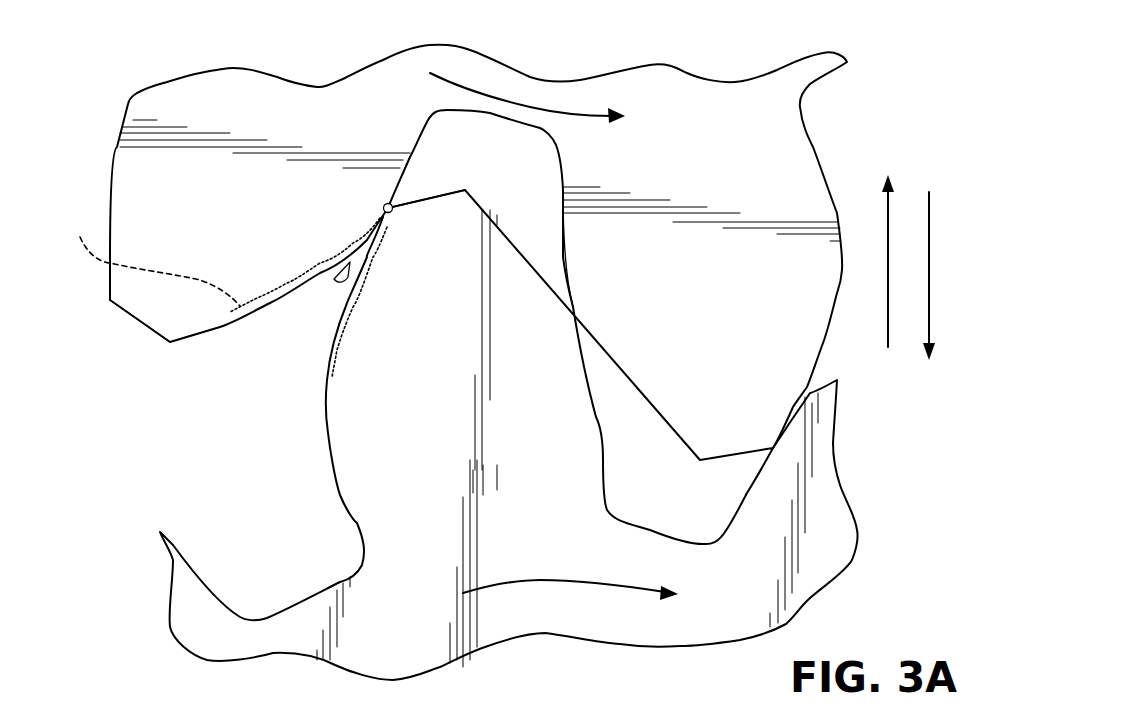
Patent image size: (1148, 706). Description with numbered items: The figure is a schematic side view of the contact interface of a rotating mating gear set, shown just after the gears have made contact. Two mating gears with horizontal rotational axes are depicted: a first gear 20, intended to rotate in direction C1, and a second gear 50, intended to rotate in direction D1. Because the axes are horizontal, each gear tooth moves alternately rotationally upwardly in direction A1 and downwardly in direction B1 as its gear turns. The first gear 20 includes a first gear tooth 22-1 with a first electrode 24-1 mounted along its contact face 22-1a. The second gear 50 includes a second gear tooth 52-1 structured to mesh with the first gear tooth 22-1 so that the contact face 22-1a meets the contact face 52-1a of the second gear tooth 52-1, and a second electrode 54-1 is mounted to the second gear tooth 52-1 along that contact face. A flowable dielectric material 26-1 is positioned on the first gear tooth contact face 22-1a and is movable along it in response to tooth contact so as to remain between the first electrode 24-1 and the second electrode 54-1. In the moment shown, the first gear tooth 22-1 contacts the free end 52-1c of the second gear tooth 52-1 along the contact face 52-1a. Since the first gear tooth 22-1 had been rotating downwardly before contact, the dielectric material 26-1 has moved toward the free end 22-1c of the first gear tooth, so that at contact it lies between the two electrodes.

The first gear 20 is at (160, 163).
The first gear tooth 22-1 is at (135, 192).
The contact face of the first gear tooth 22-1a is at (193, 340).
The free end of the first gear tooth 22-1c is at (135, 320).
The first electrode 24-1 is at (144, 259).
The dielectric material 26-1 is at (340, 275).
The second gear 50 is at (826, 516).
The second gear tooth 52-1 is at (527, 398).
The contact face of the second gear tooth 52-1a is at (357, 523).
The free end of the second gear tooth 52-1c is at (433, 192).
The second electrode 54-1 is at (348, 318).
The upward rotational direction A1 is at (874, 261).
The downward rotational direction B1 is at (940, 276).
The rotation direction of the first gear C1 is at (534, 112).
The rotation direction of the second gear D1 is at (553, 577).